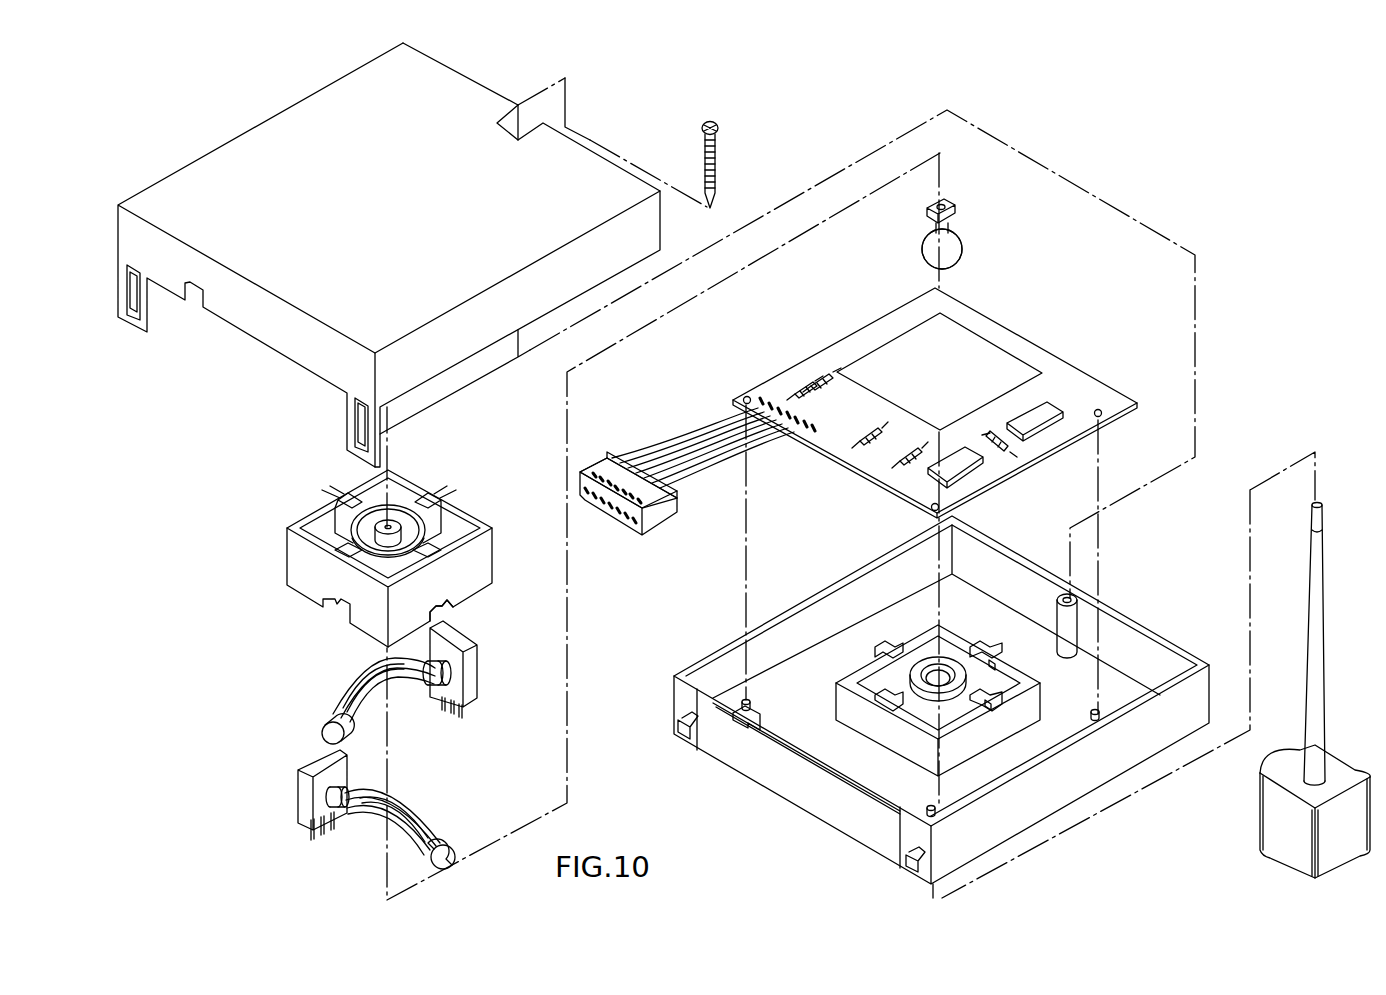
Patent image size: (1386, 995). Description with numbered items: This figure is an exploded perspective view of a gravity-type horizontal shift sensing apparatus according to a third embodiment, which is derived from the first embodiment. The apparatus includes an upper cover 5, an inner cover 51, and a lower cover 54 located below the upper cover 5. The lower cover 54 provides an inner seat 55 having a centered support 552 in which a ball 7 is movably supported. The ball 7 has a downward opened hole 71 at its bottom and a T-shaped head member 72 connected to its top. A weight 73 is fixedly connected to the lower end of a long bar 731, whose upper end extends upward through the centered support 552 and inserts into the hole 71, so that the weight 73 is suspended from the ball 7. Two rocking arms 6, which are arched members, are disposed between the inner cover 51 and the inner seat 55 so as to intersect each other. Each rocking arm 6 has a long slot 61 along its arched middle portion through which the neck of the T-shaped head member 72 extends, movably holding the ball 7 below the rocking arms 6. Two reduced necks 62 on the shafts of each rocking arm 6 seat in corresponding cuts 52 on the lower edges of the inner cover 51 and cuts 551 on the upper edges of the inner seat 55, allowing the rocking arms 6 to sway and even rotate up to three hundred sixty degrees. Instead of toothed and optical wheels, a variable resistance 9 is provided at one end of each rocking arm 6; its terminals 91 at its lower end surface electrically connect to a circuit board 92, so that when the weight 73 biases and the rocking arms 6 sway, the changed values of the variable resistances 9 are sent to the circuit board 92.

The upper cover 5 is at (235, 198).
The inner cover 51 is at (437, 502).
The cuts 52 is at (450, 607).
The lower cover 54 is at (801, 799).
The inner seat 55 is at (848, 711).
The cuts 551 is at (987, 708).
The centered support 552 is at (991, 666).
The rocking arms 6 is at (402, 682).
The long slot 61 is at (373, 672).
The reduced necks 62 is at (337, 712).
The ball 7 is at (945, 250).
The downward opened hole 71 is at (940, 267).
The T-shaped head member 72 is at (927, 215).
The weight 73 is at (1343, 778).
The long bar 731 is at (1313, 610).
The variable resistance 9 is at (460, 637).
The terminals 91 is at (472, 717).
The circuit board 92 is at (868, 455).